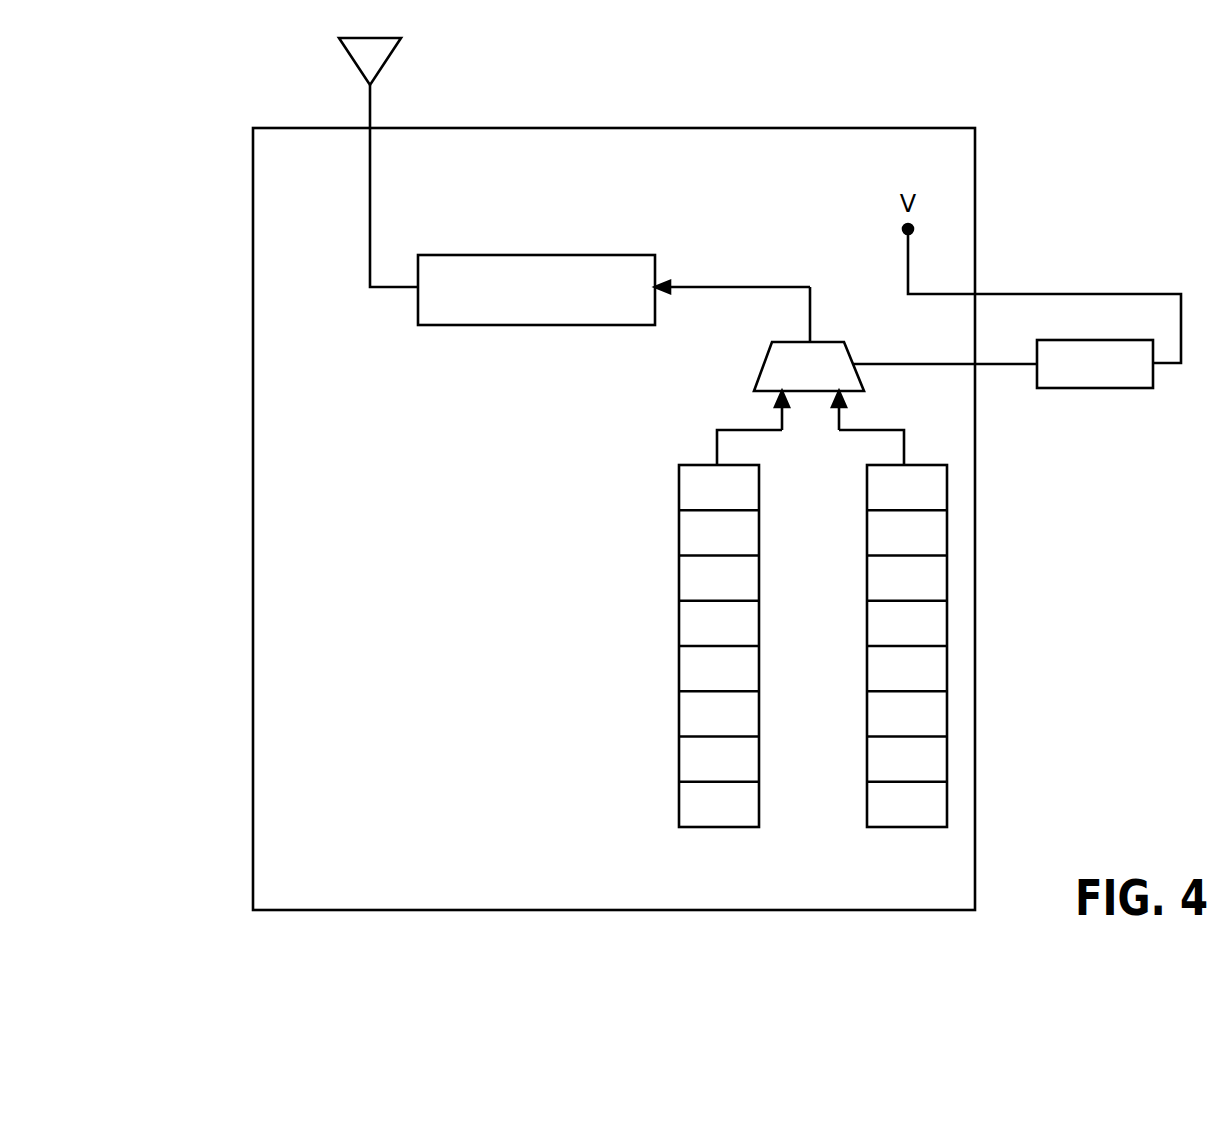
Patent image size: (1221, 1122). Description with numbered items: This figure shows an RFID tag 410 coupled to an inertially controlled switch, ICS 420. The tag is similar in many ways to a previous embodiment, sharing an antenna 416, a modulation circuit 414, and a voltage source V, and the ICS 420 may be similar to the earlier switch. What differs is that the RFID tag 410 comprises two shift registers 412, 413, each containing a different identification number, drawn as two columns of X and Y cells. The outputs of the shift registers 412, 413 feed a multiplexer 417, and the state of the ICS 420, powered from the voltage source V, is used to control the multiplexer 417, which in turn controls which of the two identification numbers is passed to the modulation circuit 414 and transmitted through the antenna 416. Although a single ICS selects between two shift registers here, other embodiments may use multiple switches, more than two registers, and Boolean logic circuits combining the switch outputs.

The RFID tag 410 is at (272, 670).
The shift register 412 is at (947, 605).
The shift register 413 is at (678, 623).
The modulation circuit 414 is at (460, 325).
The antenna 416 is at (349, 53).
The multiplexer 417 is at (866, 376).
The ICS 420 is at (1105, 390).